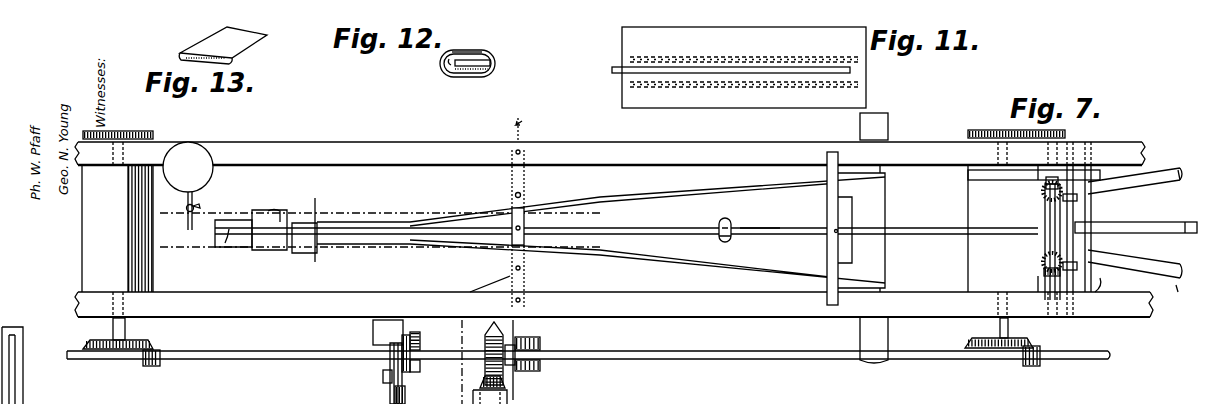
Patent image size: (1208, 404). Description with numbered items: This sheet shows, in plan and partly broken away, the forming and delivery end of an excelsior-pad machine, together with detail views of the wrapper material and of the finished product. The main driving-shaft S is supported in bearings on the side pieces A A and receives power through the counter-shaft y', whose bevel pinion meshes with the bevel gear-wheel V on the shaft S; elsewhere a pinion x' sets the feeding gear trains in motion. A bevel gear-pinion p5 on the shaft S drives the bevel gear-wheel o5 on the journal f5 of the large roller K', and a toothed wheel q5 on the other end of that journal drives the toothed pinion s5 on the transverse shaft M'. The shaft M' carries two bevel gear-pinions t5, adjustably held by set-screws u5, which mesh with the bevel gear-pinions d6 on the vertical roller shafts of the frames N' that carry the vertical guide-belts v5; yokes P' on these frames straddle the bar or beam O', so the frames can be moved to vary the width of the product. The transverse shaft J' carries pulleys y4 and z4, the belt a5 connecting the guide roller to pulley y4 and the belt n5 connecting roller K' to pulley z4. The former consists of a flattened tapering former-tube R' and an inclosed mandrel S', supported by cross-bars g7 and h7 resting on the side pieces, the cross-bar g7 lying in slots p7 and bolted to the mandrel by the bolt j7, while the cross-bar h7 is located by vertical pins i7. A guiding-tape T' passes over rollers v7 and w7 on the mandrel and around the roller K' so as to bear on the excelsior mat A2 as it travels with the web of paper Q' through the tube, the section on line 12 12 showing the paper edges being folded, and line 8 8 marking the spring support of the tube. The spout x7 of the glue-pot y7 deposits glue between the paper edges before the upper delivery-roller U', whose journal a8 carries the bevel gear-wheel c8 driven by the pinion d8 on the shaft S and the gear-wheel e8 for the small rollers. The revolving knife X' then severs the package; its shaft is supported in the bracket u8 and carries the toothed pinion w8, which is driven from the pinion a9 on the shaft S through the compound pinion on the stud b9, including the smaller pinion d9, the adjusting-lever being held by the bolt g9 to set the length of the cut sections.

In FIG. 7, the side pieces A is at (669, 134).
In FIG. 7, the main driving-shaft S is at (588, 370).
In FIG. 12, the mandrel S' is at (428, 60).
In FIG. 7, the mandrel S' is at (760, 218).
In FIG. 12, the guiding-tape T' is at (472, 81).
In FIG. 11, the guiding-tape T' is at (731, 53).
In FIG. 7, the guiding-tape T' is at (626, 248).
In FIG. 12, the former-tube R' is at (477, 37).
In FIG. 7, the former-tube R' is at (582, 228).
In FIG. 12, the web of paper Q' is at (479, 62).
In FIG. 11, the web of paper Q' is at (744, 67).
In FIG. 12, the sheet or mat A2 is at (453, 78).
In FIG. 7, the upper delivery-roller U' is at (117, 228).
In FIG. 7, the gear-wheel e8 is at (145, 131).
In FIG. 7, the glue-pot y7 is at (188, 167).
In FIG. 7, the spout x7 is at (185, 224).
In FIG. 7, the roller v7 is at (211, 242).
In FIG. 7, the section line 12 12 is at (311, 227).
In FIG. 7, the vertical pins i7 is at (511, 153).
In FIG. 7, the cross-bar h7 is at (525, 189).
In FIG. 7, the section line 8 8 is at (515, 114).
In FIG. 7, the cross-bar g7 is at (827, 160).
In FIG. 7, the slots or recesses p7 is at (834, 150).
In FIG. 7, the roller w7 is at (718, 222).
In FIG. 7, the bolt j7 is at (835, 230).
In FIG. 7, the journal a8 is at (110, 329).
In FIG. 7, the bevel gear-wheel c8 is at (151, 338).
In FIG. 7, the bevel gear-pinion d8 is at (154, 367).
In FIG. 7, the revolving knife X' is at (24, 365).
In FIG. 7, the bracket u8 is at (378, 341).
In FIG. 7, the pinion a9 is at (403, 341).
In FIG. 7, the toothed pinion w8 is at (421, 338).
In FIG. 7, the smaller compound pinion d9 is at (421, 367).
In FIG. 7, the stud b9 is at (382, 377).
In FIG. 7, the bolt g9 is at (395, 397).
In FIG. 7, the counter-shaft y' is at (453, 362).
In FIG. 7, the pinion x' is at (490, 363).
In FIG. 7, the bevel gear-wheel V is at (505, 332).
In FIG. 7, the roller K' is at (1003, 228).
In FIG. 7, the belt n5 is at (970, 173).
In FIG. 7, the transverse shaft M' is at (1036, 242).
In FIG. 7, the bar or beam O' is at (1093, 228).
In FIG. 7, the bevel gear-pinions d6 is at (1043, 199).
In FIG. 7, the set-screws u5 is at (1045, 183).
In FIG. 7, the bevel gear-pinions t5 is at (1042, 191).
In FIG. 7, the yokes P' is at (1092, 228).
In FIG. 7, the pulley y4 is at (1106, 222).
In FIG. 7, the belt a5 is at (1167, 222).
In FIG. 7, the frames N' is at (1135, 218).
In FIG. 7, the vertical guide-belts v5 is at (1180, 230).
In FIG. 7, the transverse shaft J' is at (1107, 294).
In FIG. 7, the journal f5 is at (986, 325).
In FIG. 7, the bevel gear-wheel o5 is at (1000, 350).
In FIG. 7, the bevel gear-pinion p5 is at (1030, 366).
In FIG. 7, the toothed wheel q5 is at (998, 124).
In FIG. 7, the toothed pinion s5 is at (1045, 153).
In FIG. 7, the pulley z4 is at (1095, 153).